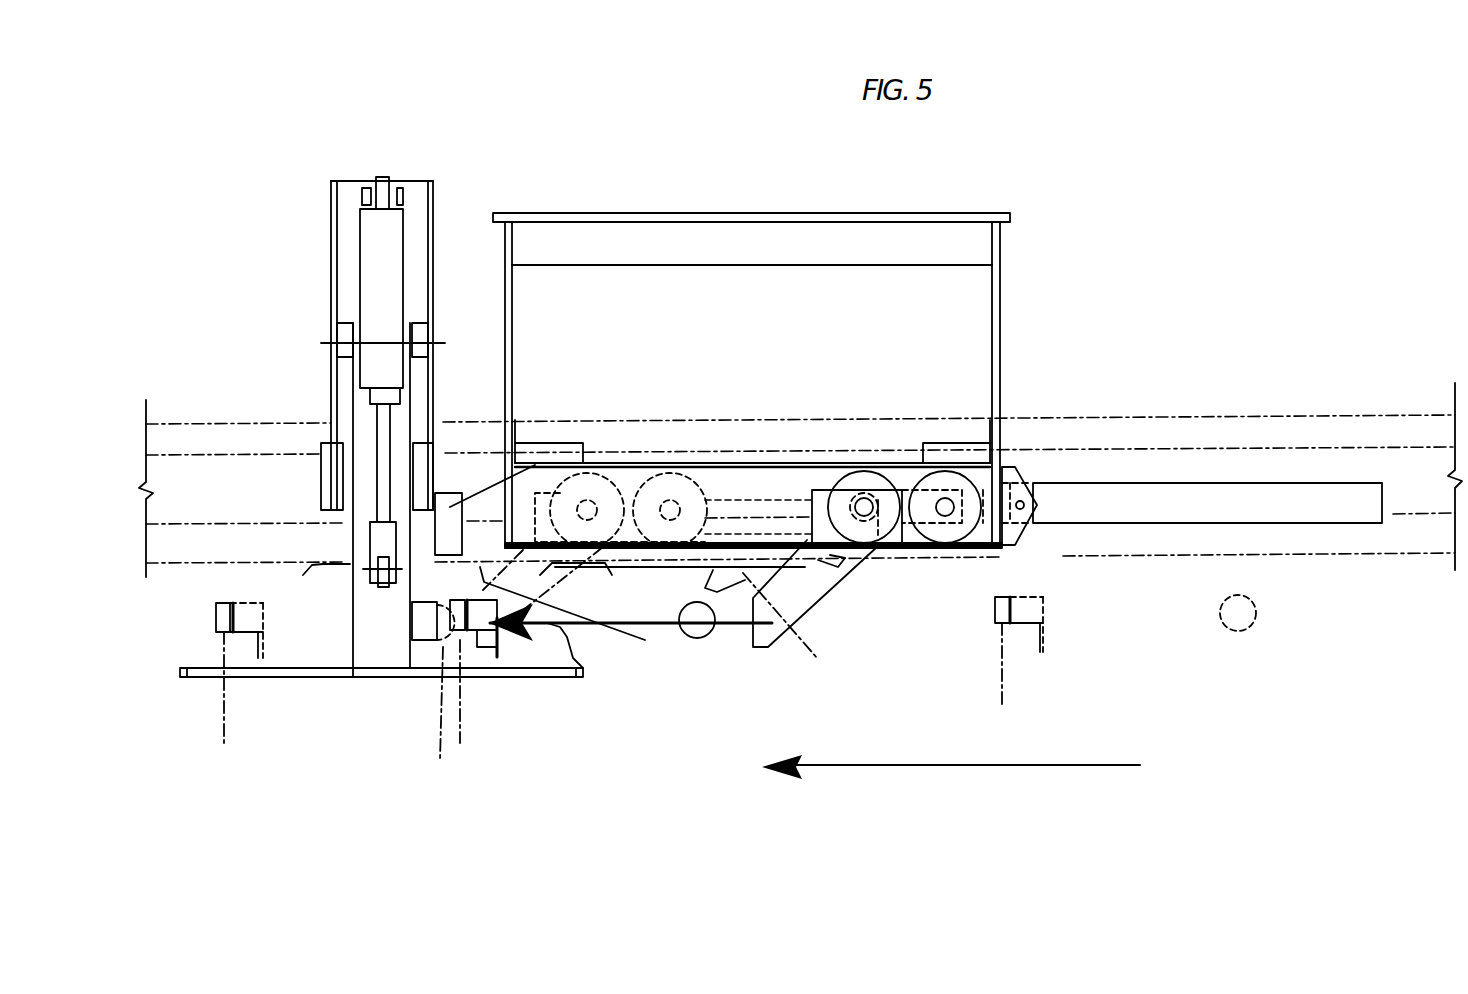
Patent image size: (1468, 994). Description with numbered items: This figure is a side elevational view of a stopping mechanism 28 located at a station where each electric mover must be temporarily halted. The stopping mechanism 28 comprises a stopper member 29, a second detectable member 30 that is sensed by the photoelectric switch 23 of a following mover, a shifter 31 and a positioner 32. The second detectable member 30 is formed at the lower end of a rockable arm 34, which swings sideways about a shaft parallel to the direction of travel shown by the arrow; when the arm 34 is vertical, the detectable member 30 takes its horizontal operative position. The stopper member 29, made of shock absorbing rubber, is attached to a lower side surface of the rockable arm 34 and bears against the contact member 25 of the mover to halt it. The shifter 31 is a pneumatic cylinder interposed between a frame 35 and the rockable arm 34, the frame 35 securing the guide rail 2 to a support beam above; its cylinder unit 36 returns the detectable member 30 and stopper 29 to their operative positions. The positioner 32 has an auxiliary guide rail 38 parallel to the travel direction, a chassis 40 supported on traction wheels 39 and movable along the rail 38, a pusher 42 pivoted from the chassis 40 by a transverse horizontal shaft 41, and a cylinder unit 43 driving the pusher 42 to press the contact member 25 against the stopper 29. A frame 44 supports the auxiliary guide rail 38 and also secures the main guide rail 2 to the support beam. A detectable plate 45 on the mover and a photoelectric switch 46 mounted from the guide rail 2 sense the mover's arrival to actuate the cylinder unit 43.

The guide rail 2 is at (1290, 427).
The photoelectric switch 23 is at (503, 737).
The contact member 25 is at (440, 760).
The stopping mechanism 28 is at (350, 693).
The stopper member 29 is at (423, 628).
The second detectable member 30 is at (285, 673).
The shifter 31 is at (352, 284).
The positioner 32 is at (885, 572).
The rockable arm 34 is at (376, 617).
The frame 35 is at (332, 223).
The cylinder unit 36 is at (375, 368).
The auxiliary guide rail 38 is at (760, 463).
The traction wheels 39 is at (904, 437).
The chassis 40 is at (630, 490).
The horizontal shaft 41 is at (828, 433).
The pusher 42 is at (573, 658).
The cylinder unit 43 is at (1157, 500).
The frame 44 is at (512, 318).
The detectable plate 45 is at (652, 563).
The photoelectric switch 46 is at (533, 480).